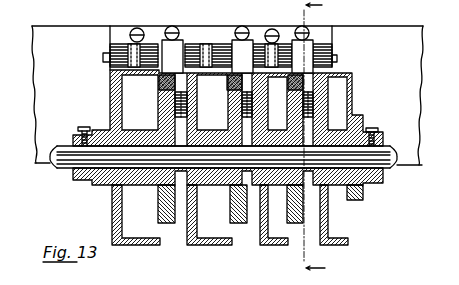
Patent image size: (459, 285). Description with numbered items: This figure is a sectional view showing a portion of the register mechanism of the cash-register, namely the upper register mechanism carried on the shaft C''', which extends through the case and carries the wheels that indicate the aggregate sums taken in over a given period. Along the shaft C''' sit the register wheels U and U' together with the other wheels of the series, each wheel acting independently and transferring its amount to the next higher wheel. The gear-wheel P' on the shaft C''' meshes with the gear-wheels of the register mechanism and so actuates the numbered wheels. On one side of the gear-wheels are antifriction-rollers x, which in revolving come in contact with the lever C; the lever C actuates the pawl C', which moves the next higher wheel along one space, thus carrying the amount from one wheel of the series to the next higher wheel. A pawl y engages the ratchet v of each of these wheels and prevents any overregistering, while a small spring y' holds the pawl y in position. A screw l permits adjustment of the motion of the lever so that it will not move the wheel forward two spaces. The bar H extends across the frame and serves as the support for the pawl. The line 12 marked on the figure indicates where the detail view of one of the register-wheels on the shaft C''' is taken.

The bar H is at (227, 95).
The screw l is at (172, 26).
The pawl y is at (220, 38).
The spring y' is at (195, 48).
The lever C is at (237, 56).
The pawl C' is at (228, 103).
The antifriction-rollers x is at (183, 108).
The shaft C''' is at (235, 168).
The gear-wheel P' is at (228, 175).
The ratchet v is at (160, 206).
The wheel U is at (136, 227).
The gear-wheel U' is at (209, 226).
The section line 12 is at (306, 138).